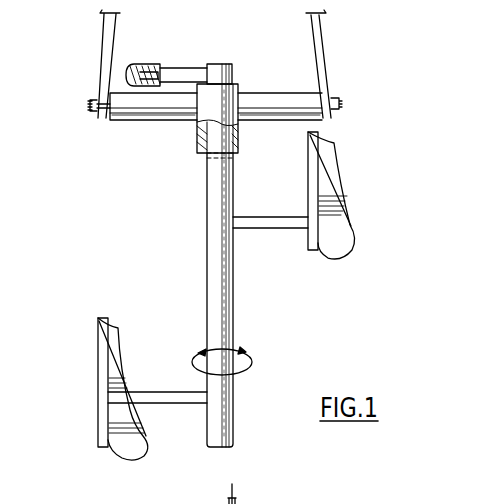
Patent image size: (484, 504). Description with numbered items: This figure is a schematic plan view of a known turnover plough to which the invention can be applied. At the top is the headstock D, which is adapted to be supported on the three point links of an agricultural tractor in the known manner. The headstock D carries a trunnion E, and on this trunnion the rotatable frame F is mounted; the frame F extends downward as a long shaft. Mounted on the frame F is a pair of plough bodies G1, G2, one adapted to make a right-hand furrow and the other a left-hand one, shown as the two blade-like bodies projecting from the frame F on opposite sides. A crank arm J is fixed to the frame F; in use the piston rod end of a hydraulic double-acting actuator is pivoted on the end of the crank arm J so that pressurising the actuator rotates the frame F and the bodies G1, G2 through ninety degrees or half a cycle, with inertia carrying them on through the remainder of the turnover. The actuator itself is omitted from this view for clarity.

The crank arm J is at (189, 66).
The headstock D is at (133, 120).
The trunnion E is at (240, 138).
The rotatable frame F is at (207, 245).
The plough body G1 is at (343, 253).
The plough body G2 is at (112, 452).